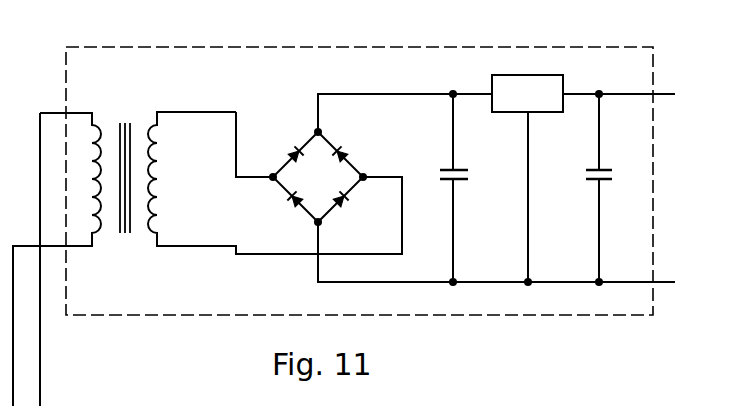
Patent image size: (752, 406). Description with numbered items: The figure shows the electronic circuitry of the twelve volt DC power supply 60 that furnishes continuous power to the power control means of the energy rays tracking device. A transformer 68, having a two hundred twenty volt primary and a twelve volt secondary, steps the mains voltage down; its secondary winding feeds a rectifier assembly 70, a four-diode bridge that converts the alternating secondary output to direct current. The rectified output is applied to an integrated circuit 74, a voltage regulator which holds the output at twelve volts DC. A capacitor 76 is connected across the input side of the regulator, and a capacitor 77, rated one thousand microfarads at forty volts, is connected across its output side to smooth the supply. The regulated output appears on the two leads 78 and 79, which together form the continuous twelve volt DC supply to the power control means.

The 12 volt DC power supply 60 is at (343, 47).
The transformer 68 is at (123, 118).
The rectifier assembly 70 is at (336, 135).
The integrated circuit 74 is at (513, 114).
The capacitor 76 is at (460, 182).
The capacitor 77 is at (606, 182).
The 12 volt DC power supply lead 78 is at (675, 93).
The 12 volt DC power supply lead 79 is at (675, 281).